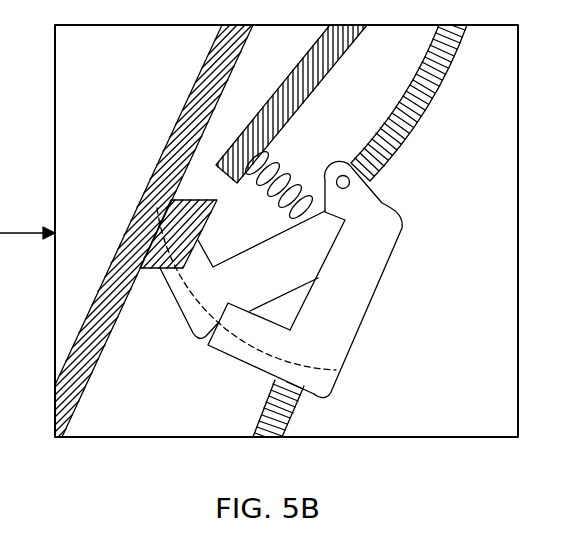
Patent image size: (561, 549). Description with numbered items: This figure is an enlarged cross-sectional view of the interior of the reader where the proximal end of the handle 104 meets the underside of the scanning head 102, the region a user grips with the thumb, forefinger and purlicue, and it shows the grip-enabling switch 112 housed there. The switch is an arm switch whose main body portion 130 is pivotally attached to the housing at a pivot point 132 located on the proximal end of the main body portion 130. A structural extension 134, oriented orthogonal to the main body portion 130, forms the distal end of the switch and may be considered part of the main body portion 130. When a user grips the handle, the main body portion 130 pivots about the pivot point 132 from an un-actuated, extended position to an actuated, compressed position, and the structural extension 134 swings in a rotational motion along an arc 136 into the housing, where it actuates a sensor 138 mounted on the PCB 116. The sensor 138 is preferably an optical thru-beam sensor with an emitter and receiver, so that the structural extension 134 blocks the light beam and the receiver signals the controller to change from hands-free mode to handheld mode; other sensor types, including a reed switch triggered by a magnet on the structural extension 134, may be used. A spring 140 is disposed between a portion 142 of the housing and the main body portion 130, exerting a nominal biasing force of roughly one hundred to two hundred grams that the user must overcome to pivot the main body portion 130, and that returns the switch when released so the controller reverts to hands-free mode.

The scanning head 102 is at (432, 107).
The handle 104 is at (262, 410).
The grip-enabling switch 112 is at (378, 358).
The PCB 116 is at (183, 138).
The main body portion 130 is at (350, 300).
The pivot point 132 is at (351, 180).
The structural extension 134 is at (233, 345).
The arc 136 is at (190, 298).
The sensor 138 is at (155, 210).
The spring 140 is at (288, 165).
The portion of the housing 142 is at (307, 70).